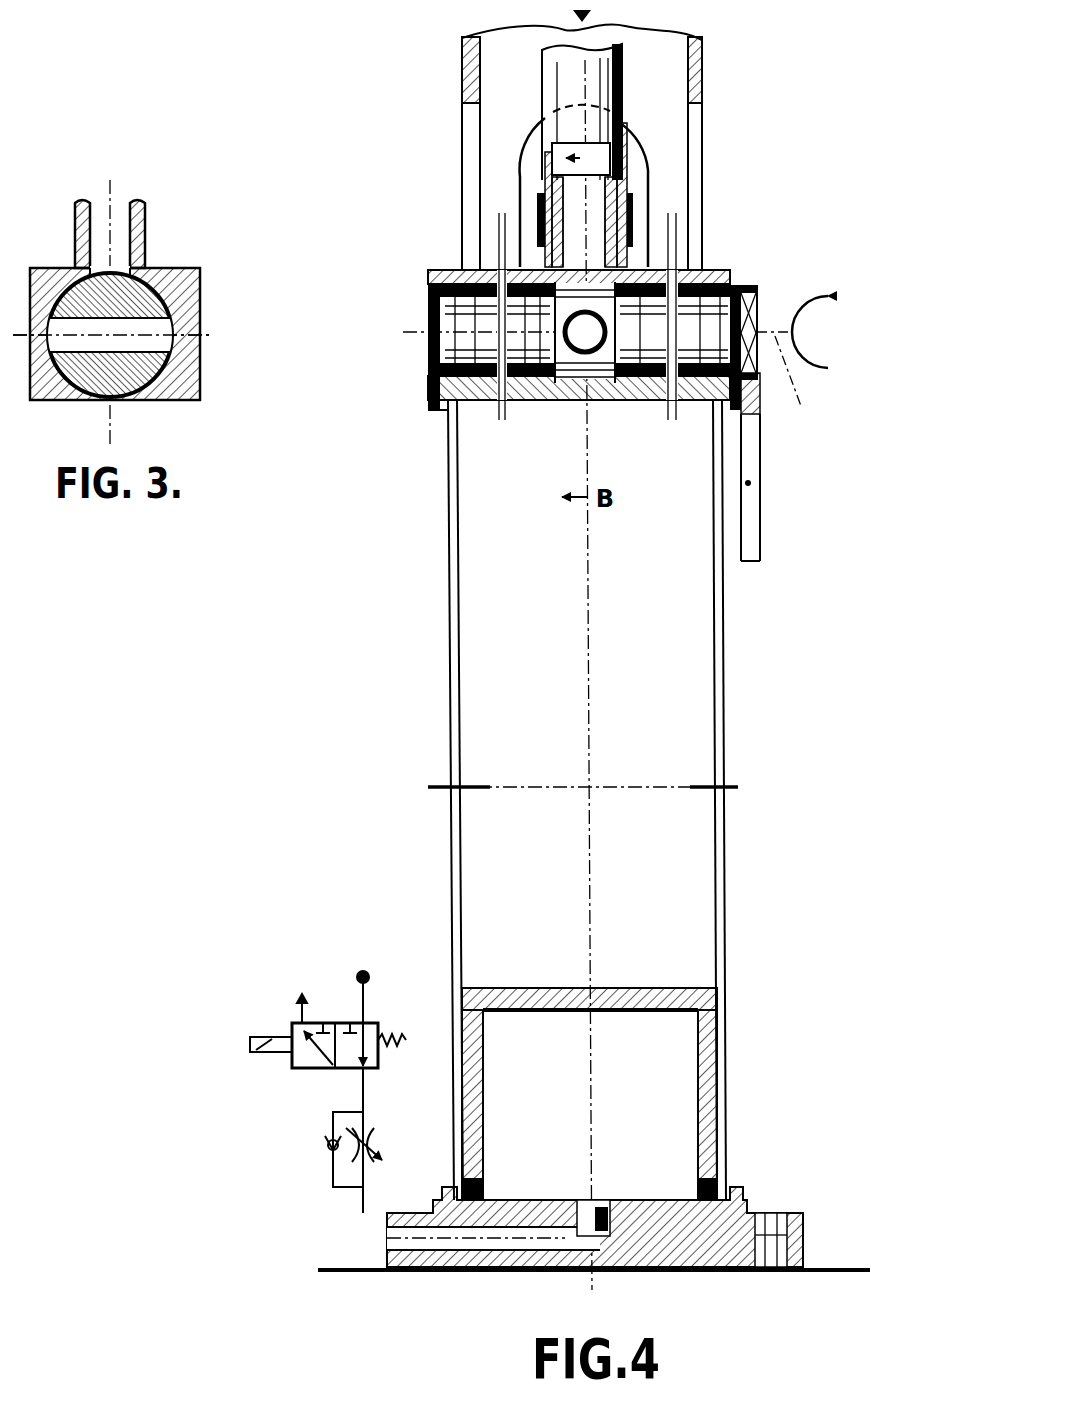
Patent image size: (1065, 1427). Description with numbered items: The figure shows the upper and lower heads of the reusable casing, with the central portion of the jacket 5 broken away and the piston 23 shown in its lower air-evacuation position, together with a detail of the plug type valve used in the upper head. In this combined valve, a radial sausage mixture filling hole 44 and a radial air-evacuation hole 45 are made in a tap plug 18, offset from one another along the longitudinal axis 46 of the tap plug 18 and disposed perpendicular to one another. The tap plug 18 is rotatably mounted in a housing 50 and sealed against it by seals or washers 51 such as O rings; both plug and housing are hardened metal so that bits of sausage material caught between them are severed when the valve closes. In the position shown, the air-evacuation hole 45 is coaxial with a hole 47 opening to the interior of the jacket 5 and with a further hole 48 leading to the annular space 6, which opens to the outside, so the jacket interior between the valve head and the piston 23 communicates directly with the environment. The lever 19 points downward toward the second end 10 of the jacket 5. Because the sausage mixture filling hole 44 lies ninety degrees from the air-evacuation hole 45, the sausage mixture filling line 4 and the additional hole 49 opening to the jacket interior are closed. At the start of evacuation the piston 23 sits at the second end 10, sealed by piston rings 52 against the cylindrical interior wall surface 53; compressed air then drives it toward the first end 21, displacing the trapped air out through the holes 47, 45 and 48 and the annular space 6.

In FIG. 3, the sausage mixture filling line 4 is at (123, 235).
In FIG. 4, the sausage mixture filling line 4 is at (630, 188).
In FIG. 4, the jacket 5 is at (722, 952).
In FIG. 4, the annular space 6 is at (672, 193).
In FIG. 4, the second end of the jacket 10 is at (744, 1128).
In FIG. 3, the tap plug 18 is at (197, 378).
In FIG. 4, the tap plug 18 is at (767, 313).
In FIG. 4, the lever 19 is at (758, 547).
In FIG. 4, the first end of the jacket 21 is at (732, 483).
In FIG. 4, the piston 23 is at (713, 1063).
In FIG. 3, the sausage mixture filling hole 44 is at (157, 325).
In FIG. 4, the sausage mixture filling hole 44 is at (566, 405).
In FIG. 4, the air-evacuation hole 45 is at (430, 324).
In FIG. 4, the longitudinal axis of the tap plug 46 is at (799, 394).
In FIG. 4, the hole opening to the interior of the jacket 47 is at (480, 400).
In FIG. 4, the further hole 48 is at (500, 280).
In FIG. 4, the additional hole opening to the interior of the jacket 49 is at (606, 405).
In FIG. 3, the housing 50 is at (200, 298).
In FIG. 4, the housing 50 is at (738, 266).
In FIG. 4, the seals or washers 51 is at (732, 270).
In FIG. 4, the piston rings 52 is at (720, 1175).
In FIG. 4, the cylindrical interior wall surface 53 is at (458, 896).